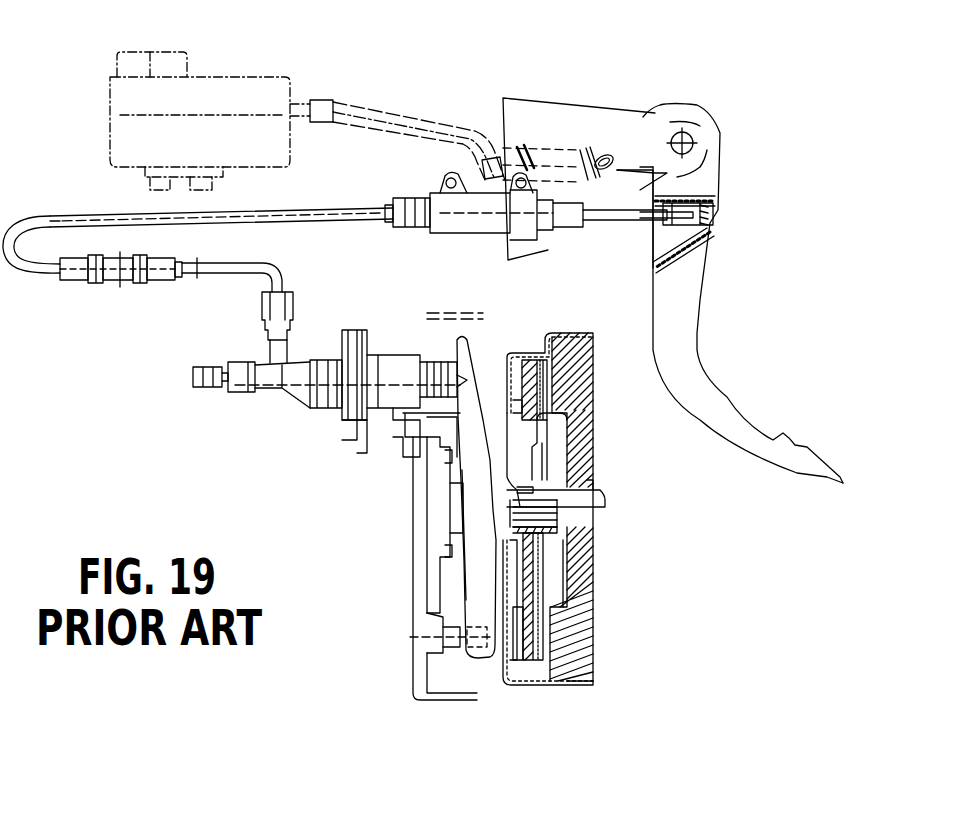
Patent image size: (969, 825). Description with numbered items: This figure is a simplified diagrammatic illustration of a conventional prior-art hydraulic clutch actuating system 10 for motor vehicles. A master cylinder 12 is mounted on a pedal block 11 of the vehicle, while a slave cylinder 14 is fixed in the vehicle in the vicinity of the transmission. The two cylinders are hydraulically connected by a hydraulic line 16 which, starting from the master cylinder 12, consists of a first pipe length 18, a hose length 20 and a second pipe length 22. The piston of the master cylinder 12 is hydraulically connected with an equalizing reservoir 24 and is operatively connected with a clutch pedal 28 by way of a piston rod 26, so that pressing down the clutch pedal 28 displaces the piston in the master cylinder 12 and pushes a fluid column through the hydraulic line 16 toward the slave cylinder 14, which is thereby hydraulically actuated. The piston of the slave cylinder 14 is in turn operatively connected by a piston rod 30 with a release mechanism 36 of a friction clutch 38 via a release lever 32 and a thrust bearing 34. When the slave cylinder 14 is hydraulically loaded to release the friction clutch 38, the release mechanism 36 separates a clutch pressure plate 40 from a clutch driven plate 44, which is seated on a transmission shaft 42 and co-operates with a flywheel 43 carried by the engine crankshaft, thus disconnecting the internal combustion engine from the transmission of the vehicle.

The hydraulic clutch actuating system 10 is at (397, 72).
The pedal block 11 is at (528, 120).
The master cylinder 12 is at (462, 228).
The slave cylinder 14 is at (298, 394).
The hydraulic line 16 is at (293, 210).
The first pipe length 18 is at (325, 222).
The hose length 20 is at (121, 270).
The second pipe length 22 is at (242, 275).
The equalizing reservoir 24 is at (229, 95).
The piston rod 26 is at (615, 221).
The clutch pedal 28 is at (680, 297).
The piston rod 30 is at (427, 316).
The release lever 32 is at (467, 405).
The thrust bearing 34 is at (497, 497).
The release mechanism 36 is at (493, 592).
The friction clutch 38 is at (522, 672).
The clutch pressure plate 40 is at (545, 630).
The transmission shaft 42 is at (570, 500).
The flywheel 43 is at (580, 592).
The clutch driven plate 44 is at (540, 455).